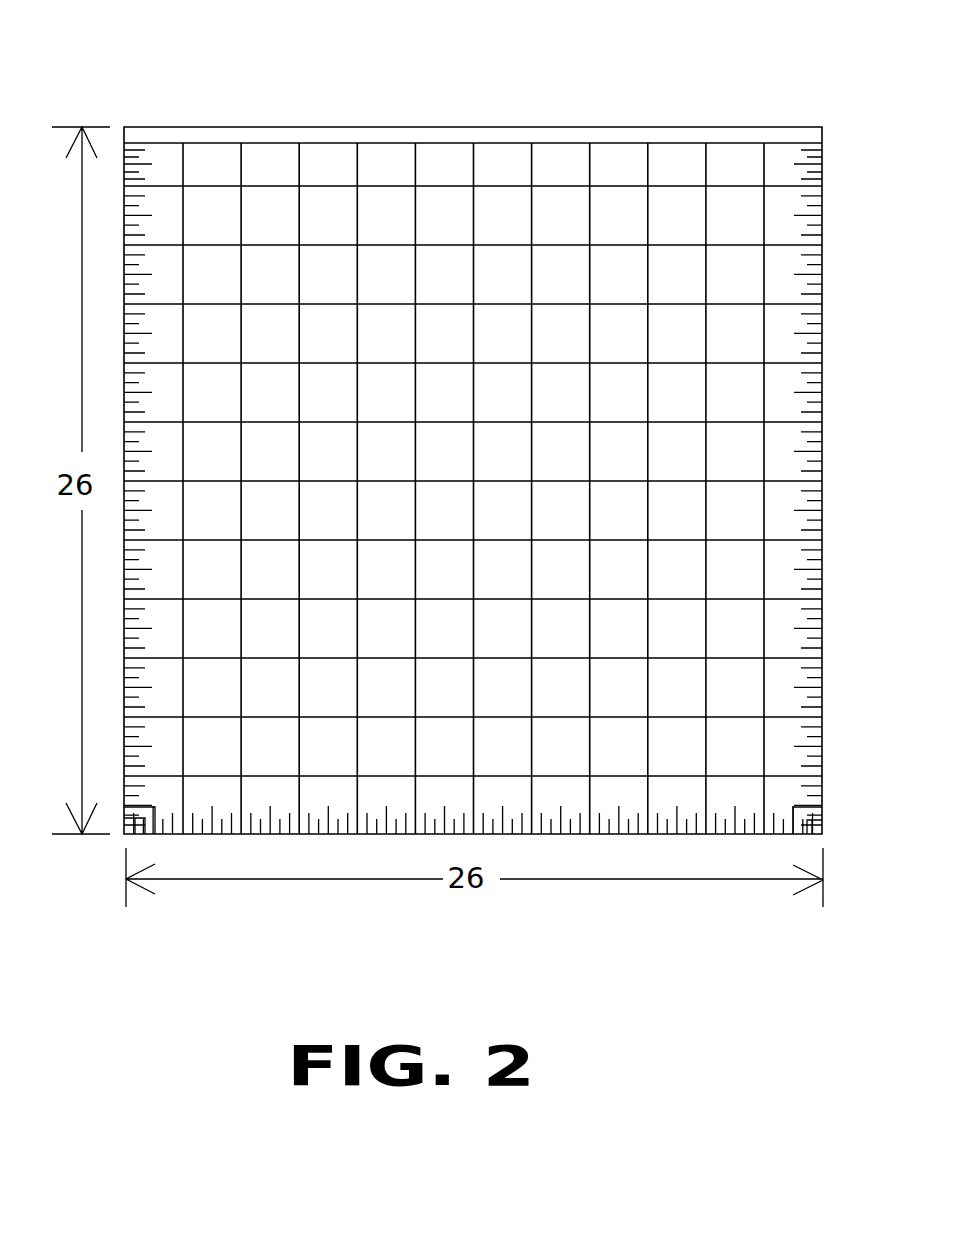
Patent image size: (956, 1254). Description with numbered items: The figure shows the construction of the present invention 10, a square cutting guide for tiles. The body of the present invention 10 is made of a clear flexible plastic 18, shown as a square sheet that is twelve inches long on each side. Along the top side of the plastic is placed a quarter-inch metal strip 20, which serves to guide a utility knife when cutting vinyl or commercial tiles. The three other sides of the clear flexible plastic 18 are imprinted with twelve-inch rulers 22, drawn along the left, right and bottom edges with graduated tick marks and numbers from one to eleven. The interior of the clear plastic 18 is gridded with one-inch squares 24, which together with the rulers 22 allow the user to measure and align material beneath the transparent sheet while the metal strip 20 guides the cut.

The present invention 10 is at (446, 107).
The clear flexible plastic 18 is at (217, 753).
The metal strip 20 is at (226, 138).
The rulers 22 is at (707, 830).
The squares 24 is at (667, 247).